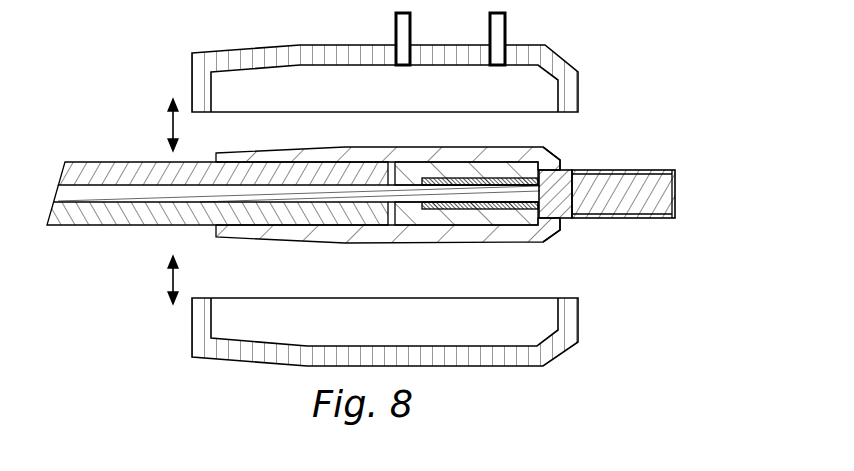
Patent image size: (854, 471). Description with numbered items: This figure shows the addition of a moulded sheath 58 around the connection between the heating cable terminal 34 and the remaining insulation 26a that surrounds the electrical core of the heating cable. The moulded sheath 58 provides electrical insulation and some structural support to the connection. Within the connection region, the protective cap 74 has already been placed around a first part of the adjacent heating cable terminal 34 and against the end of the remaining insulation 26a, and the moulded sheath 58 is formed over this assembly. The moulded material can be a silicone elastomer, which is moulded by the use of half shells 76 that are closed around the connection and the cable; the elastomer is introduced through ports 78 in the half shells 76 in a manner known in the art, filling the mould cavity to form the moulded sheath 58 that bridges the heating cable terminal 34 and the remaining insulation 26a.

The remaining insulation 26a is at (100, 226).
The heating cable terminal 34 is at (677, 197).
The moulded sheath 58 is at (552, 152).
The protective cap 74 is at (480, 225).
The half shells 76 is at (252, 49).
The ports 78 is at (396, 13).